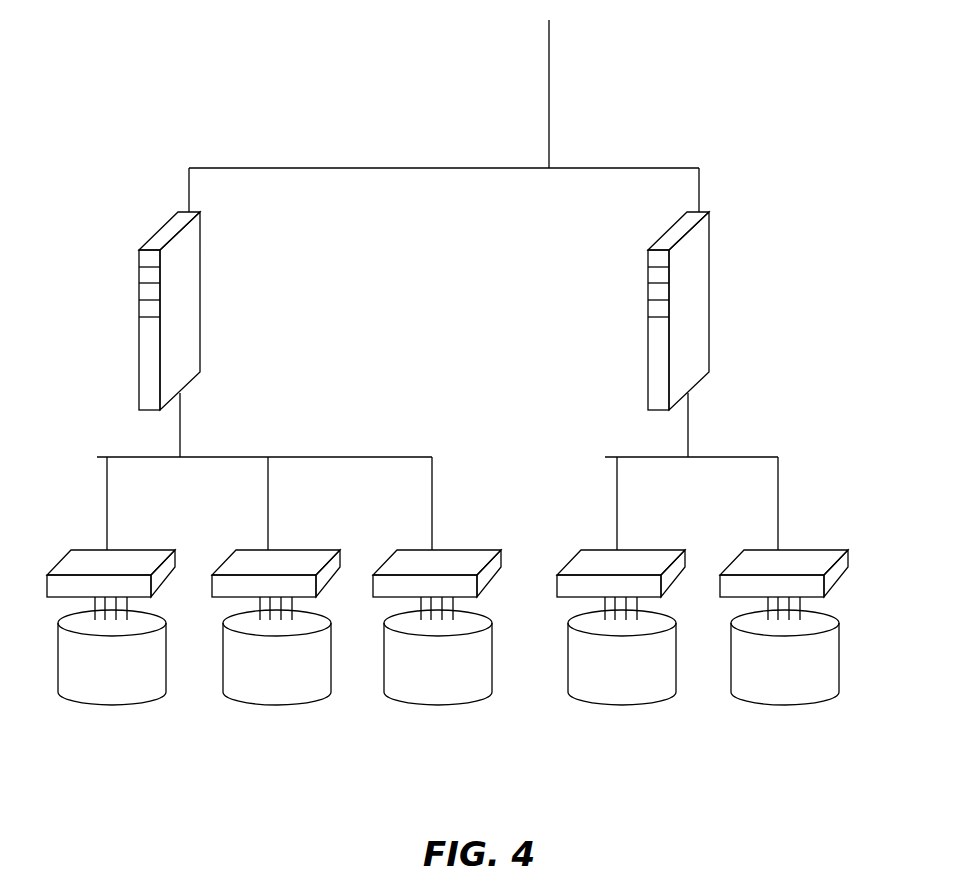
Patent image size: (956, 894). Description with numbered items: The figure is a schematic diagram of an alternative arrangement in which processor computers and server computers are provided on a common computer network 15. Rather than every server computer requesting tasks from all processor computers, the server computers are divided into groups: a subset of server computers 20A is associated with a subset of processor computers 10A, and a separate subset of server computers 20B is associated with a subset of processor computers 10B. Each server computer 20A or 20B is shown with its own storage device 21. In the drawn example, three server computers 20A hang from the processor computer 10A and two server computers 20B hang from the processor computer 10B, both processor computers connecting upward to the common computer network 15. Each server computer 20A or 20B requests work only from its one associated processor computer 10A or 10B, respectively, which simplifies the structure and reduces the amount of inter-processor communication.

The common computer network 15 is at (370, 168).
The subset of processor computers 10A is at (200, 320).
The subset of processor computers 10B is at (709, 320).
The subset of server computers 20A is at (93, 548).
The subset of server computers 20B is at (597, 562).
The storage device 21 is at (117, 670).